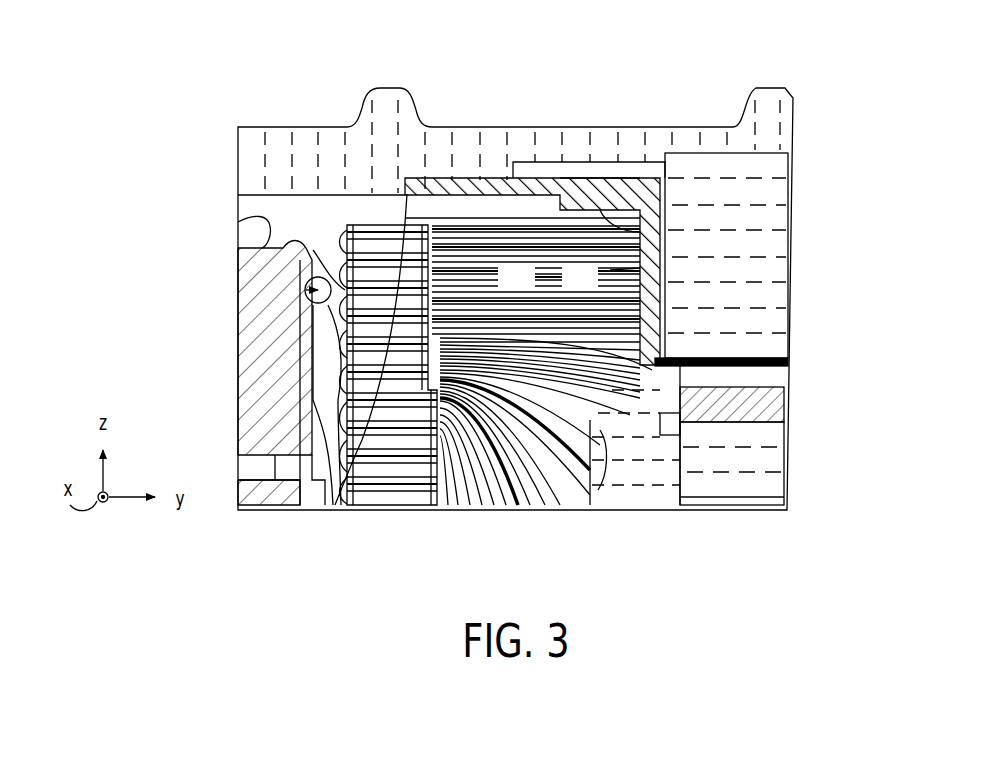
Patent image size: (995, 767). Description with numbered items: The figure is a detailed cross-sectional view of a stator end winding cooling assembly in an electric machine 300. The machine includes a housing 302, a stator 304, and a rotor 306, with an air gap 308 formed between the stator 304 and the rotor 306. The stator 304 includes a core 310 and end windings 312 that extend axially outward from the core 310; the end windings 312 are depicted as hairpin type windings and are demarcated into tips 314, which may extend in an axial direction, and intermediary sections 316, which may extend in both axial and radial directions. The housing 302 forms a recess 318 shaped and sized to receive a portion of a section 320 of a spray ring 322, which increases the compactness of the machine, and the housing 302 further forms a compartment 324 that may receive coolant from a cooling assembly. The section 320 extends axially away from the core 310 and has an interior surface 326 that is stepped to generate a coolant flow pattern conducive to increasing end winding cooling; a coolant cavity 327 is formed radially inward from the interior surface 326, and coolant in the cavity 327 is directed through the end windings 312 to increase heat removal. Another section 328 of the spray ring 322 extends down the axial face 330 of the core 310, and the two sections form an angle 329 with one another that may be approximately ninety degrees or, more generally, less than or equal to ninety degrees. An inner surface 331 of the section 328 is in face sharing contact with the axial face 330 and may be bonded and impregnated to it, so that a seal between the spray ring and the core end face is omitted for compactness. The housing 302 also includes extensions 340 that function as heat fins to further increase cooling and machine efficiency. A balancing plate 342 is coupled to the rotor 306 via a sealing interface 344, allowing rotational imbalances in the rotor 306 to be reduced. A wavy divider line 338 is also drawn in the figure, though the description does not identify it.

The electric machine 300 is at (230, 93).
The housing 302 is at (288, 104).
The stator 304 is at (697, 158).
The rotor 306 is at (717, 472).
The air gap 308 is at (690, 358).
The core 310 is at (707, 216).
The end windings 312 is at (302, 290).
The tips 314 is at (358, 244).
The intermediary sections 316 is at (486, 500).
The recess 318 is at (322, 505).
The section of the spray ring 320 is at (465, 180).
The spray ring 322 is at (590, 168).
The compartment 324 is at (535, 165).
The interior surface 326 is at (557, 198).
The coolant cavity 327 is at (485, 221).
The section of the spray ring 328 is at (650, 372).
The angle 329 is at (603, 205).
The axial face 330 is at (546, 311).
The inner surface 331 is at (640, 268).
The divider 338 is at (432, 505).
The extensions 340 is at (388, 100).
The balancing plate 342 is at (572, 505).
The sealing interface 344 is at (682, 425).